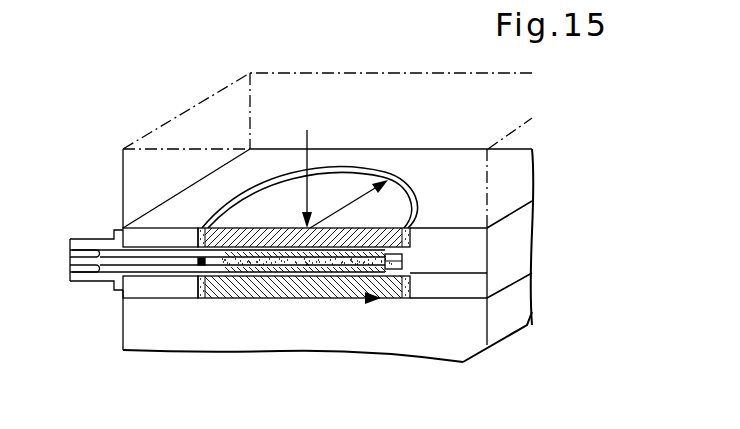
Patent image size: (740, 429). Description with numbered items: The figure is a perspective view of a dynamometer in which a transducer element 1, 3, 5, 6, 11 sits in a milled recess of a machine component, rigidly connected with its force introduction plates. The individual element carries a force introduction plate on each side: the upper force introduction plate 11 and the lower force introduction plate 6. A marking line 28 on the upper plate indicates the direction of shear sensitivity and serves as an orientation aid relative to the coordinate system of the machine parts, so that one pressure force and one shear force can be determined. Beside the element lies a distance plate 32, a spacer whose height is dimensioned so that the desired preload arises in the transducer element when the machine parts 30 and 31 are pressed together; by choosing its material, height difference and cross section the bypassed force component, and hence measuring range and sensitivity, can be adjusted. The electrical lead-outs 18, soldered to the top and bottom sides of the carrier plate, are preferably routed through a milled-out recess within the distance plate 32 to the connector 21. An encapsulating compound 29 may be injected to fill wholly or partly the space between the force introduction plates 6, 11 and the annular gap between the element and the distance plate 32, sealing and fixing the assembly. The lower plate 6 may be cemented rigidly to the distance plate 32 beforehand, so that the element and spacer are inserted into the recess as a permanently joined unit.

The transducer element 1 is at (410, 243).
The transducer element component 3 is at (408, 258).
The transducer element component 5 is at (487, 272).
The lower force introduction plate 6 is at (393, 300).
The upper force introduction plate 11 is at (390, 200).
The electrical lead-outs 18 is at (110, 267).
The connector 21 is at (72, 260).
The marking line 28 is at (350, 193).
The encapsulating compound 29 is at (200, 298).
The machine part 30 is at (163, 167).
The machine part 31 is at (477, 322).
The distance plate 32 is at (480, 257).